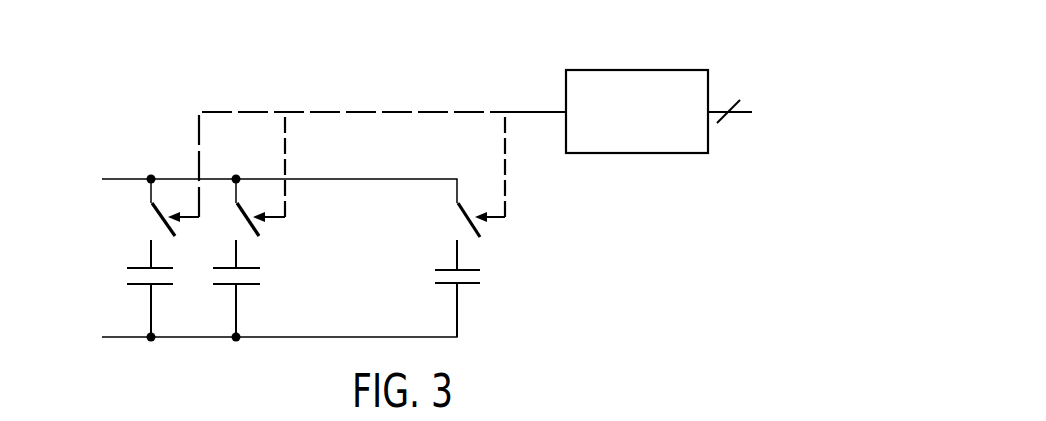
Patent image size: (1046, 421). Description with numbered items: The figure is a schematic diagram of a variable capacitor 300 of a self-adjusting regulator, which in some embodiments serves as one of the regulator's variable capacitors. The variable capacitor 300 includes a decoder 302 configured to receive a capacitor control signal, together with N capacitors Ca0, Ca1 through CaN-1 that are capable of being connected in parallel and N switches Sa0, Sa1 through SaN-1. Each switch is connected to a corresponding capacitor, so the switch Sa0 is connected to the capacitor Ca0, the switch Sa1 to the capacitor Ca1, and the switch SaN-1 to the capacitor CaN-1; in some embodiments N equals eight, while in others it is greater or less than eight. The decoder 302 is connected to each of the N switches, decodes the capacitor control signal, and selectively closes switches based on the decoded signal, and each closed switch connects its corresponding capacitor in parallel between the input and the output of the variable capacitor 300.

The variable capacitor 300 is at (419, 66).
The decoder 302 is at (633, 70).
The switch Sa0 is at (140, 218).
The switch Sa1 is at (216, 202).
The switch SaN-1 is at (446, 224).
The capacitor Ca0 is at (110, 280).
The capacitor Ca1 is at (208, 279).
The capacitor CaN-1 is at (425, 281).